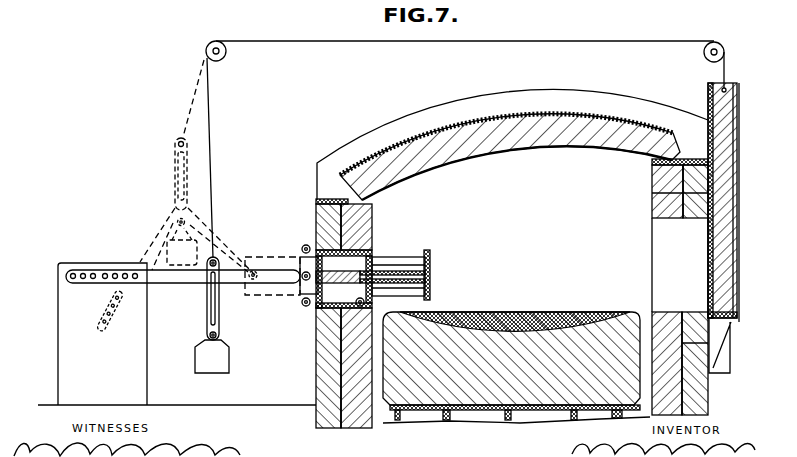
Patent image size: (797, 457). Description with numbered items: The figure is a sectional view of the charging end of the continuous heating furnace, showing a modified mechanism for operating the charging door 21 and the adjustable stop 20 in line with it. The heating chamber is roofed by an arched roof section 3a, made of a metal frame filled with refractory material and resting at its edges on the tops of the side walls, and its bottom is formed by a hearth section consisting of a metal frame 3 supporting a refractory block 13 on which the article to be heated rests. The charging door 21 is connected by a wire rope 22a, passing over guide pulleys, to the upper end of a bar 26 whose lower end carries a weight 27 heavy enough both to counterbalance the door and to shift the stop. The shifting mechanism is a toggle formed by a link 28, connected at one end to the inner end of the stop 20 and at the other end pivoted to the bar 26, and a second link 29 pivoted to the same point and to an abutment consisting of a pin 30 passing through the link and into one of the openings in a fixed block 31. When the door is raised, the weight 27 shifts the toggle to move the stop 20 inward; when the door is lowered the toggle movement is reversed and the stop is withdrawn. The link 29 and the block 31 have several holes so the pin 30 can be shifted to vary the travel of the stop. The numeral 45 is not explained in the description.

The metal frame 3 is at (480, 410).
The roof section 3a is at (437, 135).
The refractory block 13 is at (517, 345).
The adjustable stop 20 is at (409, 256).
The charging door 21 is at (722, 137).
The cable / rope over pulleys 22a is at (536, 33).
The bar 26 is at (222, 318).
The weight 27 is at (222, 360).
The link 28 is at (275, 268).
The link 29 is at (183, 276).
The pin 30 is at (113, 283).
The fixed block 31 is at (60, 312).
The sheet / figure reference 45 is at (349, 7).